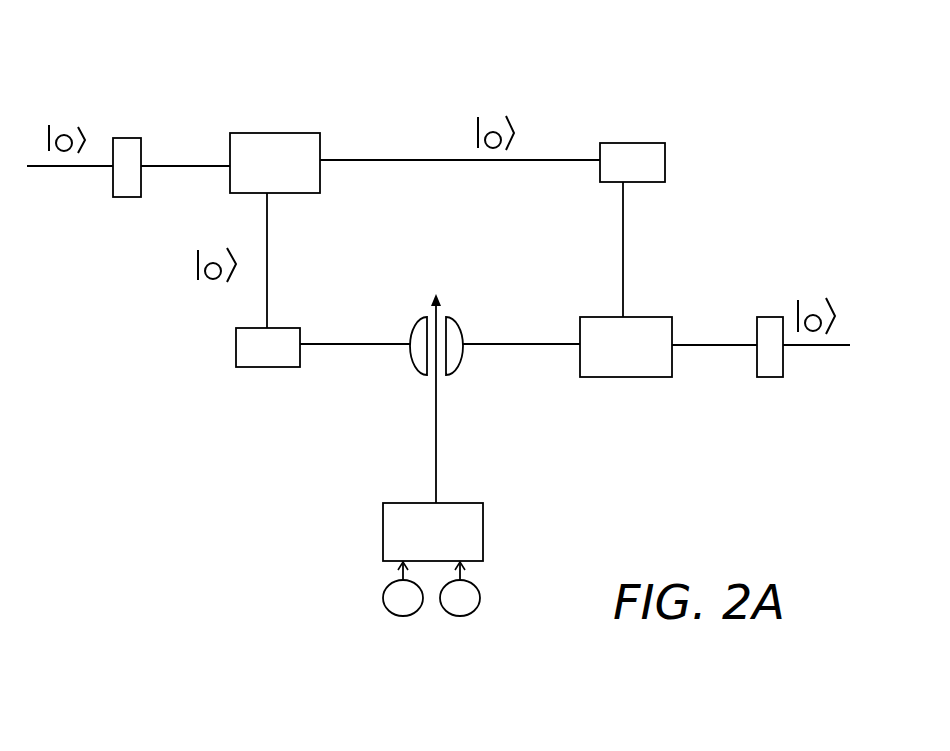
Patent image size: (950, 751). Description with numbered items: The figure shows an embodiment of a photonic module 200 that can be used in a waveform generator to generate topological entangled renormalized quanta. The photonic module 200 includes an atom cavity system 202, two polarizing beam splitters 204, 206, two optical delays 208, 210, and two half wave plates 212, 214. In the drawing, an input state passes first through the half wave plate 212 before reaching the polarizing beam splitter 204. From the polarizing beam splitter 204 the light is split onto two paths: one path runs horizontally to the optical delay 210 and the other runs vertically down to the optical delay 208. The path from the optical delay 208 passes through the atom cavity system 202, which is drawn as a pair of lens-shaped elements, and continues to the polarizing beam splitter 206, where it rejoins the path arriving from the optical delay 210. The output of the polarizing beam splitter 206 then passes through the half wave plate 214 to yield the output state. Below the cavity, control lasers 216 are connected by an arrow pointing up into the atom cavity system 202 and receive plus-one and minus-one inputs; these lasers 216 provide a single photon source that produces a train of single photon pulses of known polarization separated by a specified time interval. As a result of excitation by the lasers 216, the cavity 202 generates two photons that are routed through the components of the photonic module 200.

The photonic module 200 is at (189, 54).
The atom cavity system 202 is at (410, 322).
The polarizing beam splitter 204 is at (249, 173).
The polarizing beam splitter 206 is at (601, 360).
The optical delay 208 is at (249, 360).
The optical delay 210 is at (651, 175).
The half wave plate 212 is at (121, 197).
The half wave plate 214 is at (769, 368).
The control lasers 216 is at (413, 542).